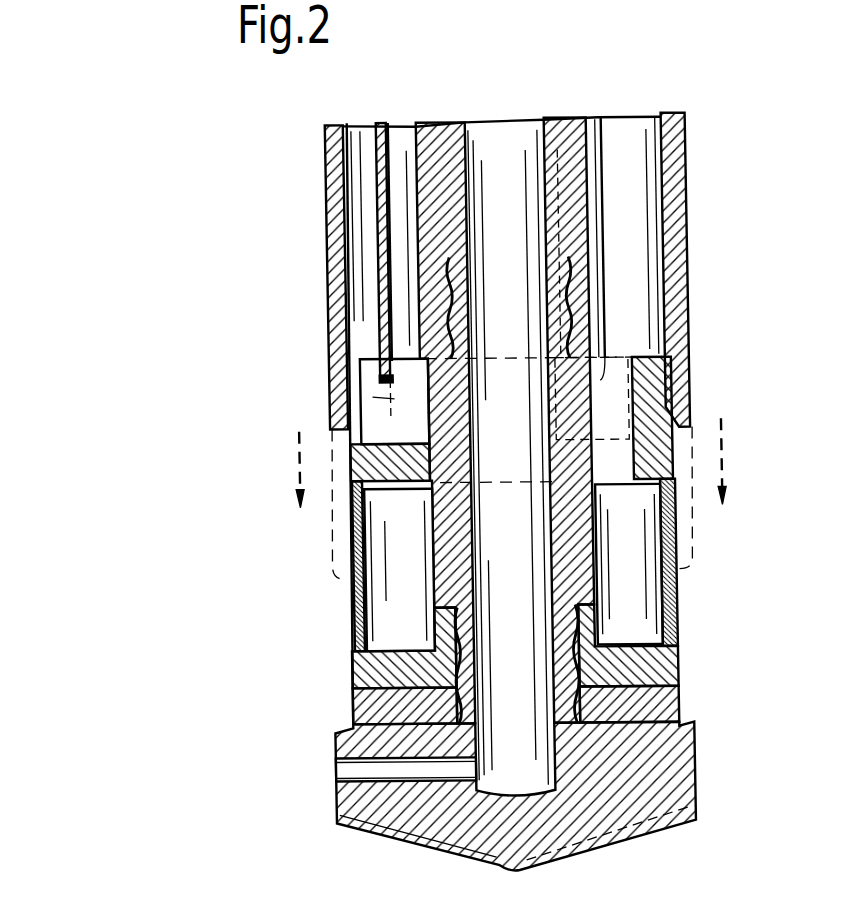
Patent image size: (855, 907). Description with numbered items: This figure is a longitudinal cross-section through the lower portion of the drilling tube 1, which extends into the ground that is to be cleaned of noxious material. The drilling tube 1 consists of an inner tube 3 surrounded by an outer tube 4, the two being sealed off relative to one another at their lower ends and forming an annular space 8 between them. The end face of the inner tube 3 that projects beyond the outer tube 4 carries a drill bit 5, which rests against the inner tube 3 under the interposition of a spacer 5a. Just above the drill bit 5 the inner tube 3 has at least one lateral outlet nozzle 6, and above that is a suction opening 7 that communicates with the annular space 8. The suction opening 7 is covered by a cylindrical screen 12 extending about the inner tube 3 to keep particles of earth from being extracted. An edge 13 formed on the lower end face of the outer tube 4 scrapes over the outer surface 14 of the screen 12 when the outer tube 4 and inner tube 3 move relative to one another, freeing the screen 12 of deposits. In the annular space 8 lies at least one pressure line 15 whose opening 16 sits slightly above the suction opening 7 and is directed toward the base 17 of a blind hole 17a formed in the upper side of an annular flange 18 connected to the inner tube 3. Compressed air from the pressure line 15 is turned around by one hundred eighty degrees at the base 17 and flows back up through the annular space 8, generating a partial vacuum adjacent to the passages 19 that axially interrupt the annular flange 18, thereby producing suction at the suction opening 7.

The drilling tube 1 is at (700, 325).
The inner tube 3 is at (430, 236).
The outer tube 4 is at (692, 144).
The drill bit 5 is at (405, 816).
The spacer 5a is at (342, 691).
The outlet nozzle 6 is at (327, 773).
The suction opening 7 is at (642, 588).
The annular space 8 is at (647, 149).
The cylindrical screen 12 is at (674, 618).
The edge 13 is at (340, 431).
The outer surface 14 is at (345, 546).
The pressure line 15 is at (402, 151).
The opening 16 is at (328, 378).
The base 17 is at (340, 418).
The blind hole 17a is at (425, 436).
The annular flange 18 is at (343, 498).
The passages 19 is at (616, 461).